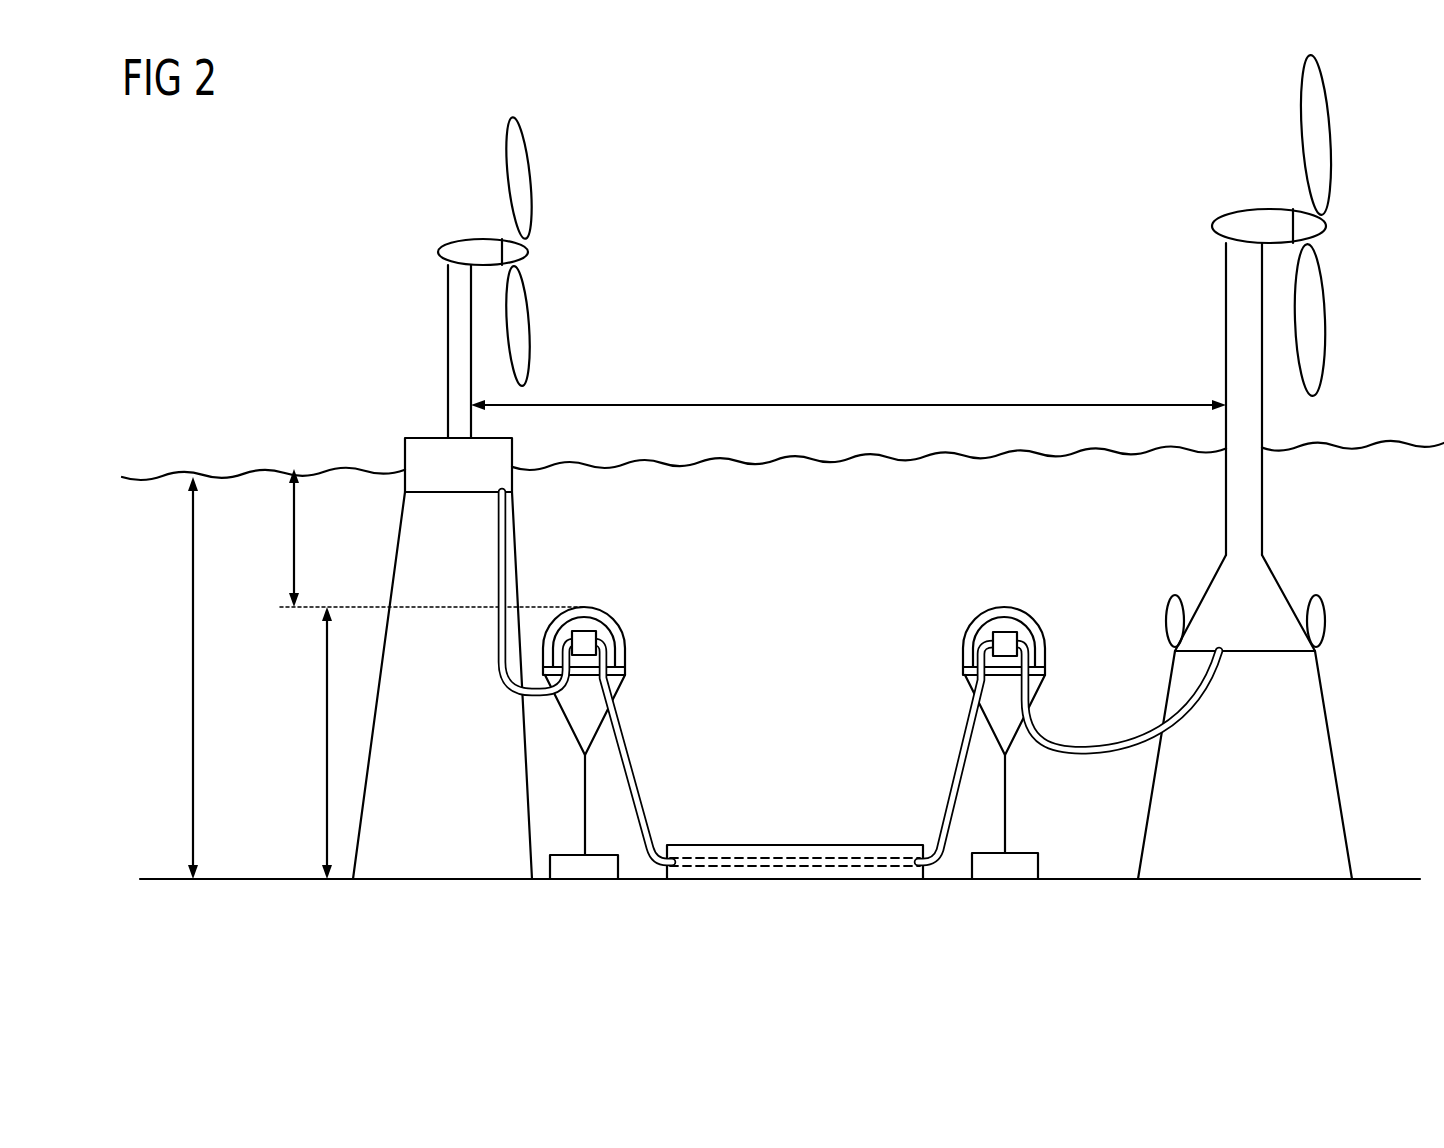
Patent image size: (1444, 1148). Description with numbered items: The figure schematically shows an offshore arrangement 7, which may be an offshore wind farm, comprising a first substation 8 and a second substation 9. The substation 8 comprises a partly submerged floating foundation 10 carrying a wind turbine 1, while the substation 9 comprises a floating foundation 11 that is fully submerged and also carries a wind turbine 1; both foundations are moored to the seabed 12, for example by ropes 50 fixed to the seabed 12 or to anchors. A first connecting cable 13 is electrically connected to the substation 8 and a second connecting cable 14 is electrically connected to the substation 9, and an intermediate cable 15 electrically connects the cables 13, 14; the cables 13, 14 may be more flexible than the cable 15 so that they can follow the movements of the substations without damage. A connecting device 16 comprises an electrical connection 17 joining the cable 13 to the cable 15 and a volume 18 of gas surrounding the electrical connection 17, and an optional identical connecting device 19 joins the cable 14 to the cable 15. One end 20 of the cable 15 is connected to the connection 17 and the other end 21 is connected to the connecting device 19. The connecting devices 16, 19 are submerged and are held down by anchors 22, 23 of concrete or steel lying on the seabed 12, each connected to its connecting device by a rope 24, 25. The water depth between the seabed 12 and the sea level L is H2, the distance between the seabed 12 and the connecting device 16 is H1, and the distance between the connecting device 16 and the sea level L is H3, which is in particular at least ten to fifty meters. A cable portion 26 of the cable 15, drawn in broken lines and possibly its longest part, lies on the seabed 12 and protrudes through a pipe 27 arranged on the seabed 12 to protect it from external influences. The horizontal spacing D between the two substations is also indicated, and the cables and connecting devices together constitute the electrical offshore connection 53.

The wind turbine 1 is at (448, 323).
The offshore arrangement 7 is at (971, 246).
The substation 8 is at (380, 429).
The substation 9 is at (1338, 417).
The floating foundation 10 is at (405, 487).
The floating foundation 11 is at (1282, 590).
The seabed 12 is at (1248, 879).
The cable 13 is at (497, 567).
The cable 14 is at (1115, 756).
The cable 15 is at (654, 783).
The connecting device 16 is at (642, 633).
The electrical connection 17 is at (583, 633).
The volume of gas 18 is at (614, 647).
The connecting device 19 is at (1051, 616).
The end 20 is at (610, 627).
The end 21 is at (985, 645).
The anchor 22 is at (582, 880).
The anchor 23 is at (1007, 880).
The rope 24 is at (585, 790).
The rope 25 is at (1005, 820).
The cable portion 26 is at (755, 858).
The pipe 27 is at (836, 850).
The ropes 50 is at (397, 556).
The electrical offshore connection 53 is at (623, 581).
The distance between turbines D is at (848, 405).
The sea level L is at (265, 470).
The distance H1 is at (327, 742).
The distance H2 is at (193, 673).
The distance H3 is at (294, 538).